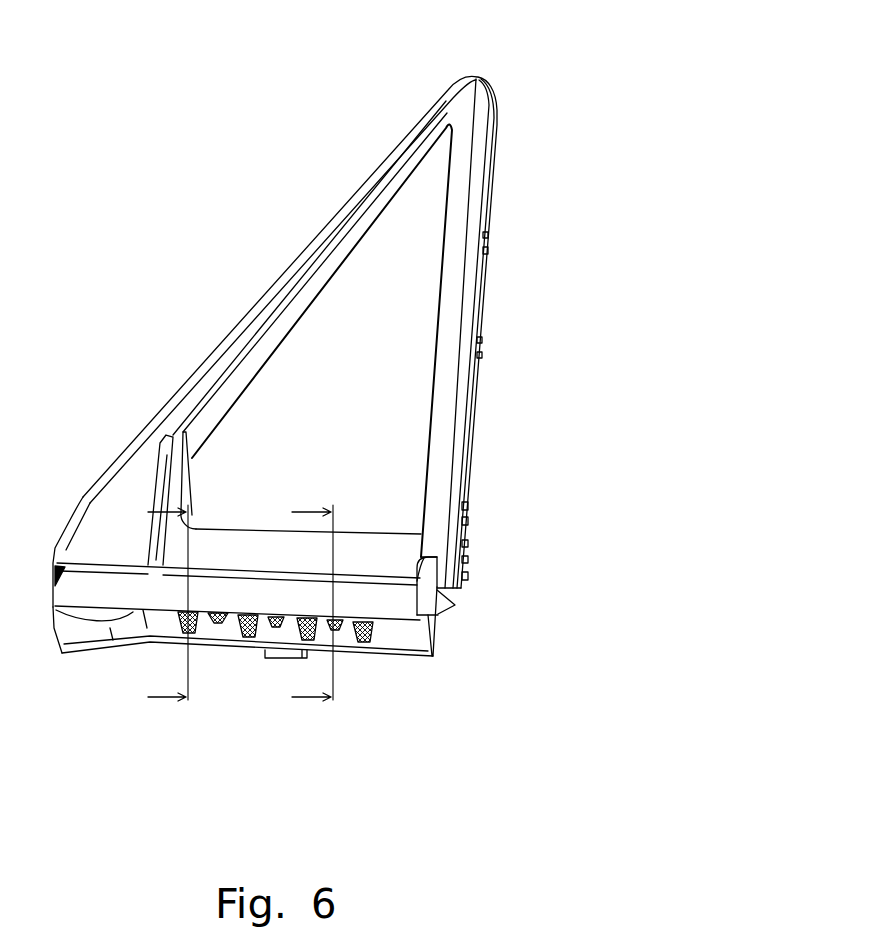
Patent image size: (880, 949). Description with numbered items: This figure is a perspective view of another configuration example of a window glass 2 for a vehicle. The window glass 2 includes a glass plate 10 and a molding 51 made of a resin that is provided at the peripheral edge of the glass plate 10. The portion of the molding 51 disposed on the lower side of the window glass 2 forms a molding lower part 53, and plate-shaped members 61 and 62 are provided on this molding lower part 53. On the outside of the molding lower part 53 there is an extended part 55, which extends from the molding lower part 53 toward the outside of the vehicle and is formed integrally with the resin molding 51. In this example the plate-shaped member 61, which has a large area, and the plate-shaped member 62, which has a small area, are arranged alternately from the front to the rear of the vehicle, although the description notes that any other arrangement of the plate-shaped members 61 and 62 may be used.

The window glass for a vehicle 2 is at (180, 95).
The glass plate 10 is at (377, 455).
The molding 51 is at (212, 383).
The molding lower part 53 is at (424, 637).
The extended part 55 is at (455, 605).
The plate-shaped member 61 is at (180, 613).
The plate-shaped member 62 is at (343, 628).